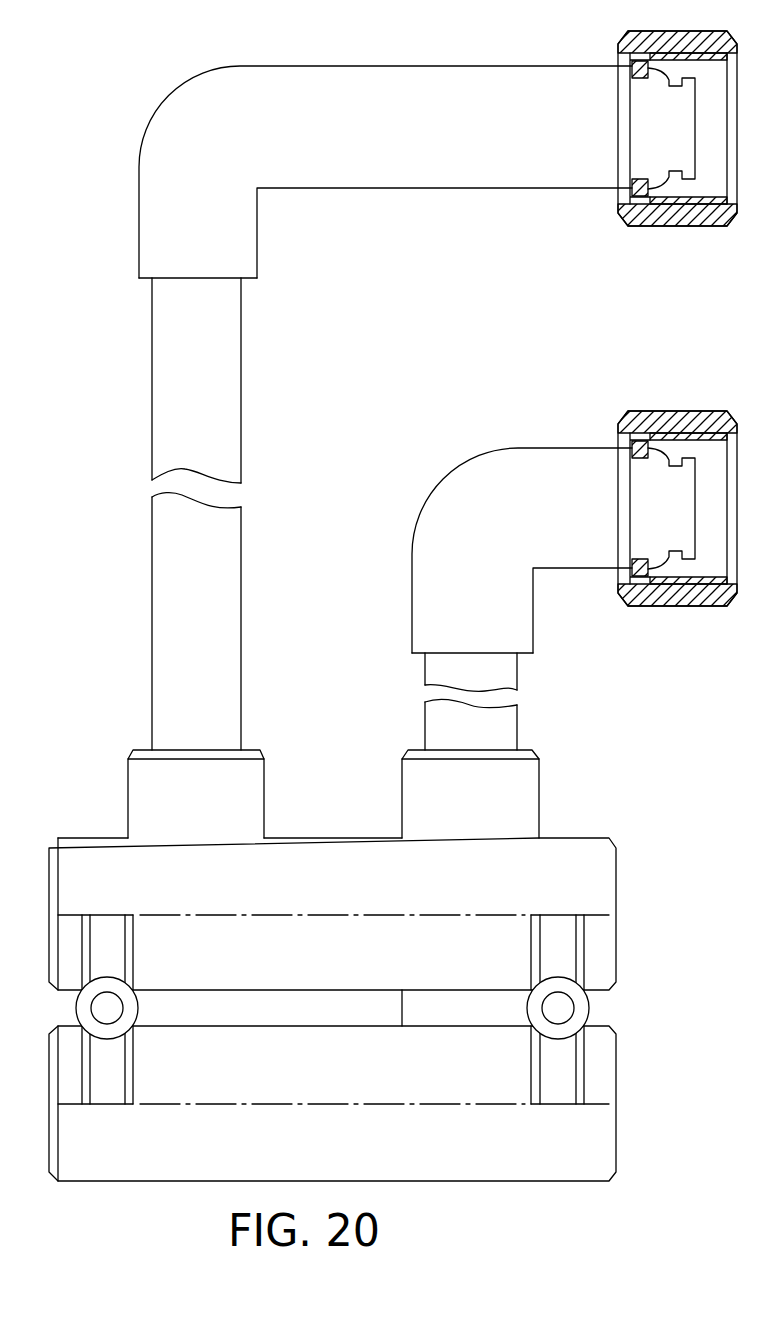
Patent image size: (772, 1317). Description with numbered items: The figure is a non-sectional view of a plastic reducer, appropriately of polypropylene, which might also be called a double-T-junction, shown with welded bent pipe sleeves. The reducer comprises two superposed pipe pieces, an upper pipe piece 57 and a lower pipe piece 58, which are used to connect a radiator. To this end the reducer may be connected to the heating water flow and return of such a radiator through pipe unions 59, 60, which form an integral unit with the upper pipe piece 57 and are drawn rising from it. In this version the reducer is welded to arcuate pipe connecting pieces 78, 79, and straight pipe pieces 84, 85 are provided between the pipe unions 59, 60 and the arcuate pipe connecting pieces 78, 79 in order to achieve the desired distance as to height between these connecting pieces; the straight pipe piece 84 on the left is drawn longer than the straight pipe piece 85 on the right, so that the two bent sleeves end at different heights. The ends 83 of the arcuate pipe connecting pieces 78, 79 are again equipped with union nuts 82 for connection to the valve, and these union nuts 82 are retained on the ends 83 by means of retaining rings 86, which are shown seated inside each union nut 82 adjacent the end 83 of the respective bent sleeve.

The upper pipe piece 57 is at (595, 887).
The lower pipe piece 58 is at (595, 1132).
The pipe union 59 is at (245, 784).
The pipe union 60 is at (523, 810).
The arcuate pipe connecting piece 78 is at (195, 113).
The arcuate pipe connecting piece 79 is at (488, 505).
The union nut 82 is at (645, 225).
The end of arcuate pipe connecting piece 83 is at (677, 152).
The straight pipe piece 84 is at (218, 433).
The straight pipe piece 85 is at (505, 730).
The retaining ring 86 is at (626, 188).